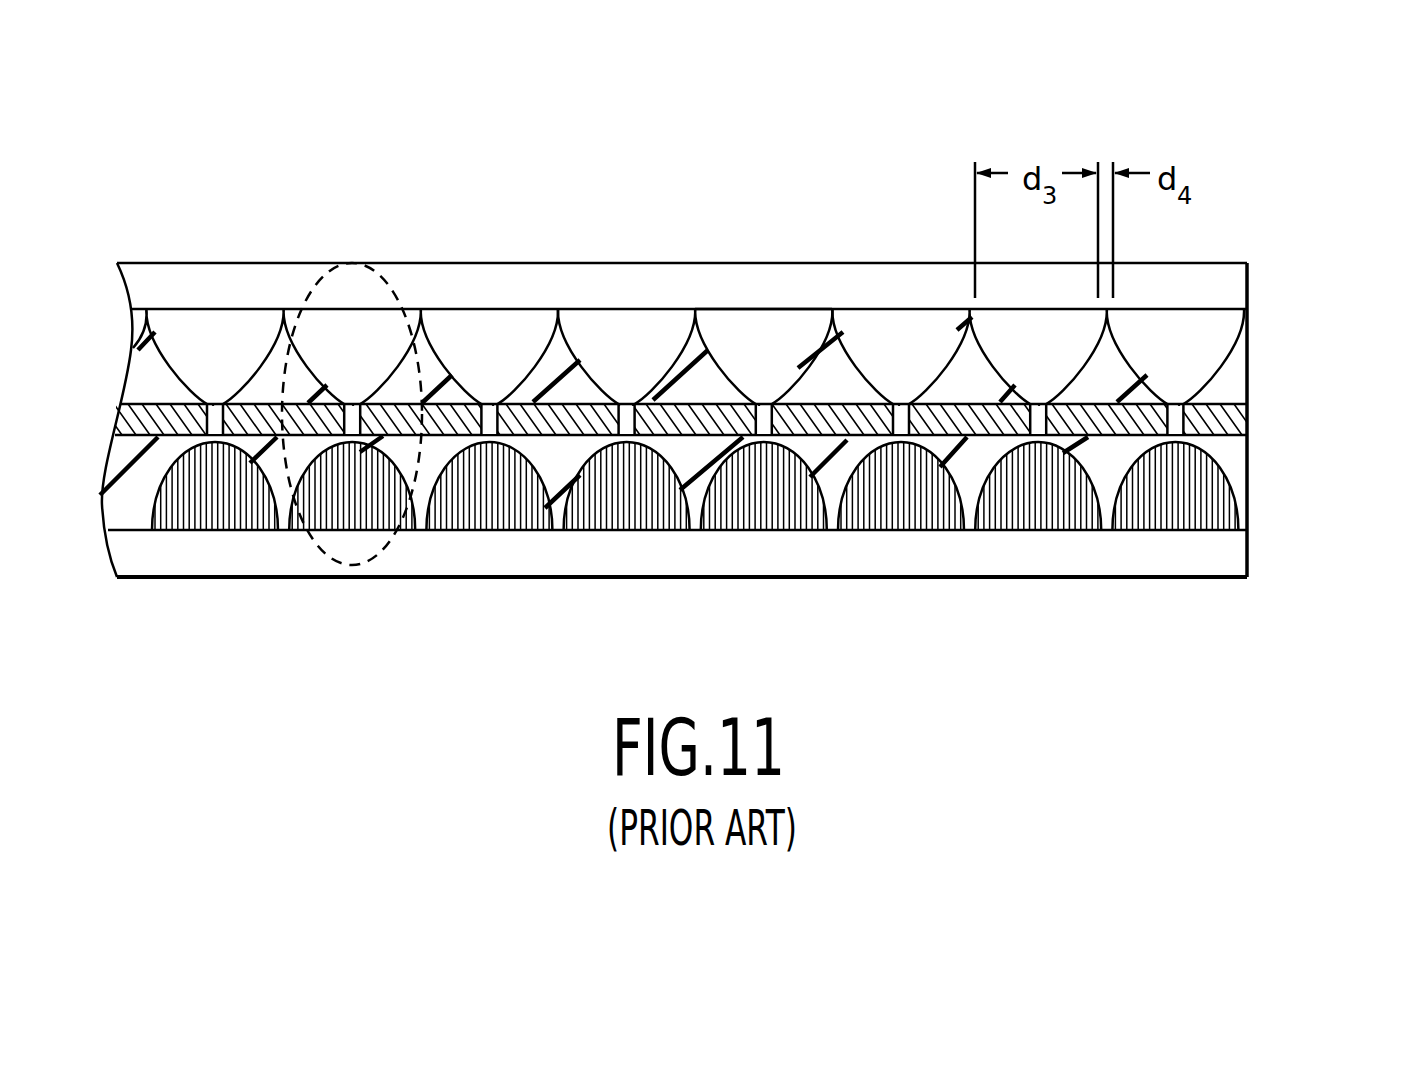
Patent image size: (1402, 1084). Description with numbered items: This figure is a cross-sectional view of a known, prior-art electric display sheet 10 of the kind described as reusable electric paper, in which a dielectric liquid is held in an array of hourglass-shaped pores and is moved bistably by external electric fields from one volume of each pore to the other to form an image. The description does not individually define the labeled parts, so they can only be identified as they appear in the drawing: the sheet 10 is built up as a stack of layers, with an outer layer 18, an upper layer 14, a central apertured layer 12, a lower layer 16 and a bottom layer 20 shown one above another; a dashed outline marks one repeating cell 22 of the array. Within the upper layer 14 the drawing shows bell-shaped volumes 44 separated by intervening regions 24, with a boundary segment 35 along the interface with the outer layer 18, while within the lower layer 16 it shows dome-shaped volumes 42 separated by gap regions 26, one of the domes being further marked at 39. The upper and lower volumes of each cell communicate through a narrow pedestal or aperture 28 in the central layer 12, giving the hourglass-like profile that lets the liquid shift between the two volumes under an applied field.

The prior art display device 10 is at (248, 180).
The light-blocking layer with apertures 12 is at (1233, 420).
The upper lens layer 14 is at (1233, 355).
The lower layer 16 is at (1233, 487).
The top substrate layer 18 is at (1233, 283).
The bottom substrate layer 20 is at (1233, 562).
The unit cell region 22 is at (352, 263).
The interstitial region between lens elements 24 is at (537, 330).
The gap region between domes 26 is at (850, 485).
The aperture pedestal 28 is at (1172, 412).
The flat interface segment 35 is at (775, 312).
The dome fill material 39 is at (1162, 522).
The dome element 42 is at (902, 518).
The bell-shaped lens element 44 is at (615, 323).